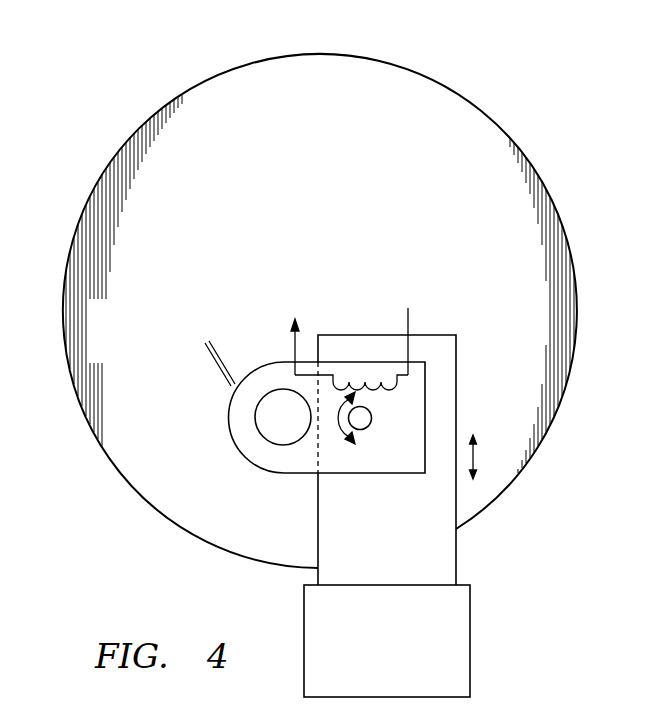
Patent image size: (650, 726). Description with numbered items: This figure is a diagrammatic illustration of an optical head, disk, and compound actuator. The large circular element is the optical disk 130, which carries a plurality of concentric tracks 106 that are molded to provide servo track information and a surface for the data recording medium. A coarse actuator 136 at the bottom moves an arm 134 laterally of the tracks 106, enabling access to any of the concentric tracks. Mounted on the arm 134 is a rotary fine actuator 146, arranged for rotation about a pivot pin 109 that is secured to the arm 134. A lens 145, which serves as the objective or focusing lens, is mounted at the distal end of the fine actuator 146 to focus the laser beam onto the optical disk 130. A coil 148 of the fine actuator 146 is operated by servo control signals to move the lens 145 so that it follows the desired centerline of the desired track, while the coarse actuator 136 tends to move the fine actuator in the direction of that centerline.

The optical disk 130 is at (462, 120).
The arm 134 is at (456, 555).
The coarse actuator 136 is at (470, 641).
The lens 145 is at (274, 428).
The rotary fine actuator 146 is at (425, 395).
The coil 148 is at (380, 393).
The pivot pin 109 is at (366, 432).
The tracks 106 is at (220, 360).